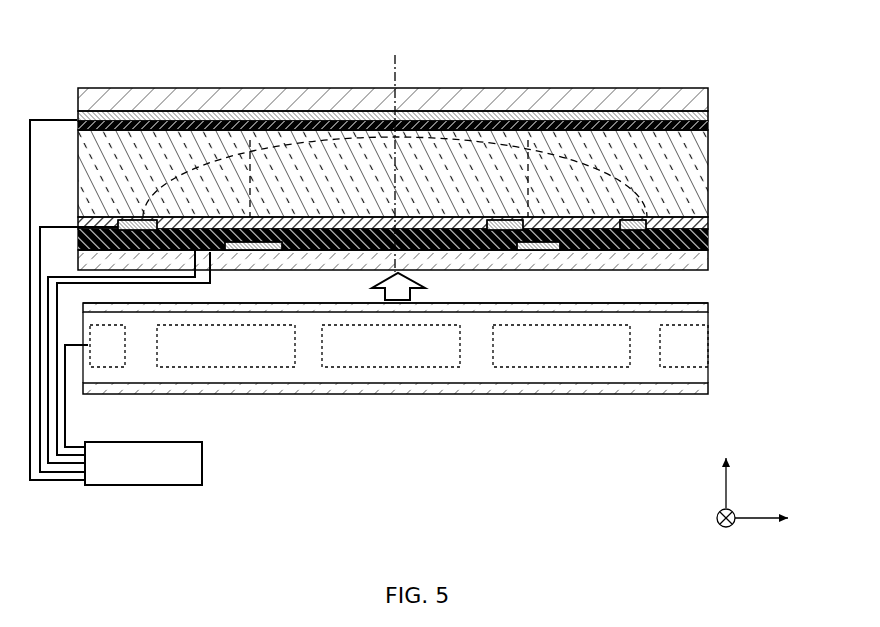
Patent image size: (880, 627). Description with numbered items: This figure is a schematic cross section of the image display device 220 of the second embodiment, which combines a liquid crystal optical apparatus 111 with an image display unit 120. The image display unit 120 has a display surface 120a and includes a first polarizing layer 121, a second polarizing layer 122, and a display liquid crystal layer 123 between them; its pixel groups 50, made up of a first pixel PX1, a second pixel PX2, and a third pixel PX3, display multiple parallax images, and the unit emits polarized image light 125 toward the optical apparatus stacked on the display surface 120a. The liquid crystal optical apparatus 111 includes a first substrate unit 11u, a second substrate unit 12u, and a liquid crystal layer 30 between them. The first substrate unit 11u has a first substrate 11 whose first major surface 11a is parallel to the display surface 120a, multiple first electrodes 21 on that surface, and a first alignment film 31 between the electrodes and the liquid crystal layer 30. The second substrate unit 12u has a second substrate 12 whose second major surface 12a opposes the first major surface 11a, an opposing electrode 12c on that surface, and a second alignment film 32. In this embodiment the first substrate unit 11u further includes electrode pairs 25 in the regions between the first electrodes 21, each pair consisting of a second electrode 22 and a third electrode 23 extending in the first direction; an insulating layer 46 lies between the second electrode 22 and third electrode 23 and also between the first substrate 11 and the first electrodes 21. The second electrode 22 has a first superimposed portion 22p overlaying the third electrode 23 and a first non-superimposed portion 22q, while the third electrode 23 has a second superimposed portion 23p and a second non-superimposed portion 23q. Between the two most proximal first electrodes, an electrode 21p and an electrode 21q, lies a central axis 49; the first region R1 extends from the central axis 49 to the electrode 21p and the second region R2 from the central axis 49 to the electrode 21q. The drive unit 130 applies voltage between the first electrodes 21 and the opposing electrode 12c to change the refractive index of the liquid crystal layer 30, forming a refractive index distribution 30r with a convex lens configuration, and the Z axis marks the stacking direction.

The second substrate 12 is at (698, 92).
The opposing electrode 12c is at (688, 115).
The second alignment film 32 is at (648, 125).
The second major surface 12a is at (655, 133).
The liquid crystal layer 30 is at (690, 160).
The first major surface 11a is at (585, 248).
The first electrodes 21 is at (637, 219).
The first alignment film 31 is at (650, 240).
The first substrate 11 is at (688, 258).
The second substrate unit 12u is at (760, 90).
The first substrate unit 11u is at (760, 205).
The liquid crystal optical apparatus 111 is at (812, 270).
The electrode 21q is at (127, 220).
The first non-superimposed portion 22q is at (493, 220).
The first superimposed portion 22p is at (522, 220).
The second electrode 22 is at (553, 38).
The second superimposed portion 23p is at (520, 250).
The second non-superimposed portion 23q is at (556, 250).
The third electrode 23 is at (670, 455).
The electrode pairs 25 is at (297, 437).
The electrode 21p is at (632, 230).
The insulating layer 46 is at (115, 240).
The refractive index distribution 30r is at (175, 146).
The central axis 49 is at (394, 78).
The second region R2 is at (281, 82).
The first region R1 is at (577, 80).
The image display device 220 is at (694, 62).
The image light 125 is at (425, 292).
The image display unit 120 is at (451, 341).
The display surface 120a is at (656, 303).
The first polarizing layer 121 is at (688, 308).
The second polarizing layer 122 is at (688, 387).
The display liquid crystal layer 123 is at (650, 347).
The pixel groups 50 is at (540, 455).
The first pixel PX1 is at (313, 395).
The second pixel PX2 is at (400, 367).
The third pixel PX3 is at (502, 367).
The drive unit 130 is at (202, 462).
The Z axis Z is at (769, 506).